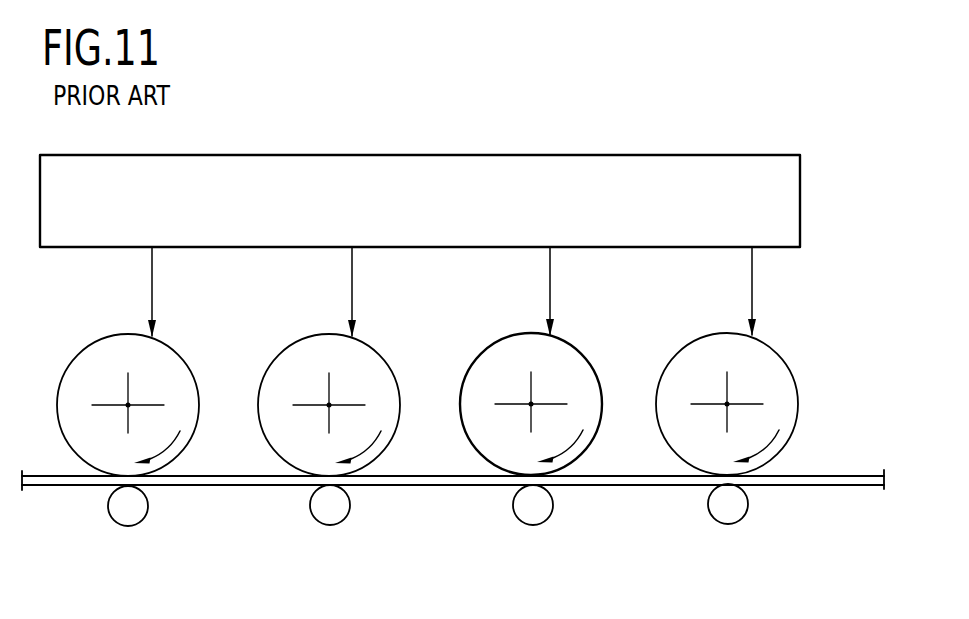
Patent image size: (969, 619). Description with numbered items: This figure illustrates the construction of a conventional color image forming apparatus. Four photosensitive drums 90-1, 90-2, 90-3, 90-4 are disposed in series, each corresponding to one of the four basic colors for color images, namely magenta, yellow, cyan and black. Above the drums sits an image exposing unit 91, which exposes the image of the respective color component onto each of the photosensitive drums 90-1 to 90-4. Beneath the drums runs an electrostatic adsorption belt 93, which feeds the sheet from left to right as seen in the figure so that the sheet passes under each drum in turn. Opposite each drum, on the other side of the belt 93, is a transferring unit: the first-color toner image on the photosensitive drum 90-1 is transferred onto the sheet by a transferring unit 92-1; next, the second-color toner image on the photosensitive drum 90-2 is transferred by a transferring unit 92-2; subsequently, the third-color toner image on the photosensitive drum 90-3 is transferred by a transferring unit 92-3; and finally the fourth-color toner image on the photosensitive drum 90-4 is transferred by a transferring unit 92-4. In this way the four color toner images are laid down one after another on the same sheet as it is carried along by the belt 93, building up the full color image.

The image exposing unit 91 is at (801, 197).
The photosensitive drum 90-1 is at (768, 346).
The photosensitive drum 90-2 is at (572, 346).
The photosensitive drum 90-3 is at (370, 347).
The photosensitive drum 90-4 is at (169, 347).
The transferring unit 92-1 is at (722, 524).
The transferring unit 92-2 is at (534, 525).
The transferring unit 92-3 is at (331, 525).
The transferring unit 92-4 is at (108, 506).
The electrostatic adsorption belt 93 is at (841, 485).